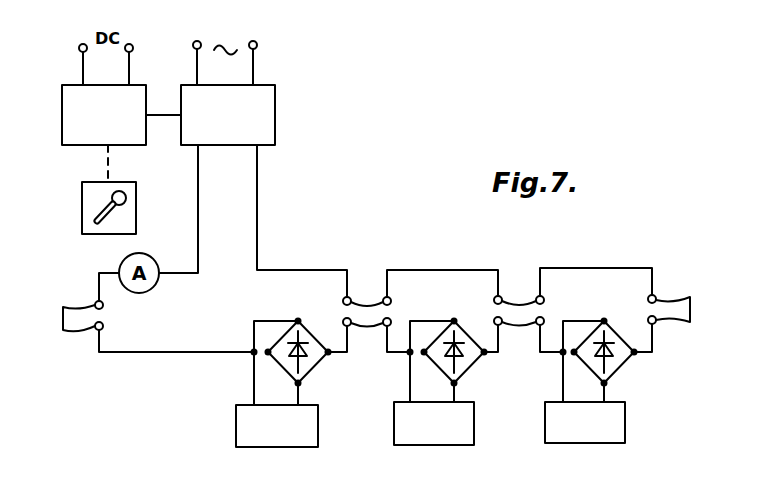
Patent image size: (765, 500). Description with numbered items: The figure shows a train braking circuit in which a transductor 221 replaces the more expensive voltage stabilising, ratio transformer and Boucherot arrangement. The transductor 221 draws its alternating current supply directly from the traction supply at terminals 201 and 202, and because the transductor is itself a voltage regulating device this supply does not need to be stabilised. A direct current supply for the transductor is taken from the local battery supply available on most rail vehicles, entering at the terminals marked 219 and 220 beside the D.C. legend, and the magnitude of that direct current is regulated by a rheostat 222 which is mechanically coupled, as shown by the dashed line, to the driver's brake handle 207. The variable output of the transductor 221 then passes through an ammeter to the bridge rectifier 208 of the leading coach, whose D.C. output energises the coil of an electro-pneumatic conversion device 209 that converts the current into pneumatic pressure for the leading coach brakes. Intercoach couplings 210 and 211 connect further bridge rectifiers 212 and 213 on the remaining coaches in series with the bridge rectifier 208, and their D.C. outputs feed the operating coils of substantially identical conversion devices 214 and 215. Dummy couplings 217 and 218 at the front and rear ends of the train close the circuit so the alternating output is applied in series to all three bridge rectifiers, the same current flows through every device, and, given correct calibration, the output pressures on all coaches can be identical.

The traction supply terminal 201 is at (193, 40).
The traction supply terminal 202 is at (256, 40).
The driver's brake handle 207 is at (136, 211).
The bridge rectifier 208 is at (312, 367).
The electro-pneumatic conversion device 209 is at (318, 428).
The intercoach coupling 210 is at (366, 291).
The intercoach coupling 211 is at (518, 292).
The bridge rectifier 212 is at (470, 362).
The bridge rectifier 213 is at (617, 362).
The electro-pneumatic conversion device 214 is at (474, 422).
The electro-pneumatic conversion device 215 is at (625, 422).
The dummy coupling 217 is at (80, 307).
The dummy coupling 218 is at (673, 291).
The DC input terminal 219 is at (80, 51).
The DC input terminal 220 is at (133, 50).
The transductor 221 is at (275, 118).
The rheostat 222 is at (134, 140).